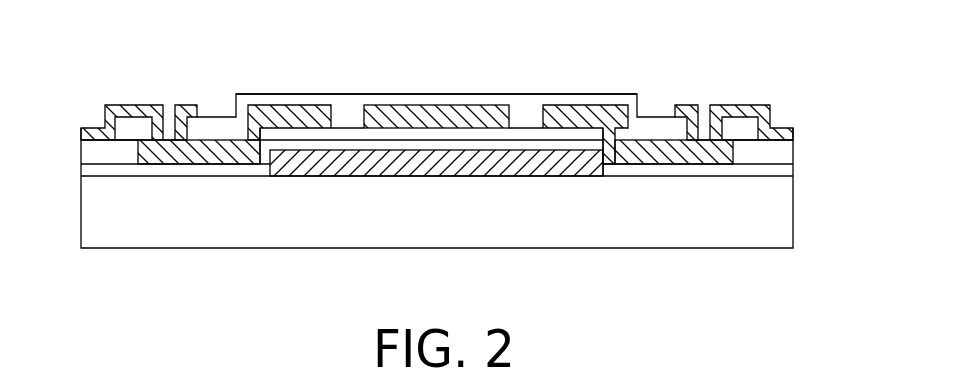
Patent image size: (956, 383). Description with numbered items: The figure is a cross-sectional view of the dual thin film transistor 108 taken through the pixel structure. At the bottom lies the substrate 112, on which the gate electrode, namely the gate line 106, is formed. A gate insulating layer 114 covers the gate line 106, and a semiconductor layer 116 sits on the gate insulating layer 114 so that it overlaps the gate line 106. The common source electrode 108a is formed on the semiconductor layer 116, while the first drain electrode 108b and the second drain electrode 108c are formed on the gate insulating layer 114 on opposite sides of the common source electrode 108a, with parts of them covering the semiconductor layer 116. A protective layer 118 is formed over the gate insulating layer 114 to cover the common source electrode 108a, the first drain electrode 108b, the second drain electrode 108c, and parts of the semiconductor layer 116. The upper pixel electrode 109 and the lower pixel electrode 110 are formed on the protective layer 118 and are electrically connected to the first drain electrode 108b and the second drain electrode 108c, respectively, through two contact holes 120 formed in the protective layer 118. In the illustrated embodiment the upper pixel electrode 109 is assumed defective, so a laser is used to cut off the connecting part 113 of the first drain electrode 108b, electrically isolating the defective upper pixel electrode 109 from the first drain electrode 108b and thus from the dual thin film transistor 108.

The gate line 106 is at (405, 157).
The dual thin film transistor 108 is at (100, 67).
The common source electrode 108a is at (426, 108).
The first drain electrode 108b is at (277, 110).
The second drain electrode 108c is at (570, 115).
The upper pixel electrode 109 is at (137, 104).
The lower pixel electrode 110 is at (772, 106).
The substrate 112 is at (697, 200).
The connecting part 113 is at (210, 164).
The gate insulating layer 114 is at (137, 166).
The semiconductor layer 116 is at (485, 135).
The protective layer 118 is at (344, 107).
The contact holes 120 is at (168, 108).